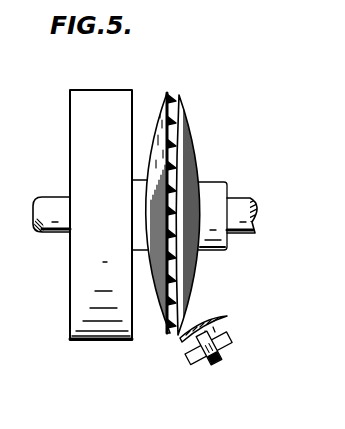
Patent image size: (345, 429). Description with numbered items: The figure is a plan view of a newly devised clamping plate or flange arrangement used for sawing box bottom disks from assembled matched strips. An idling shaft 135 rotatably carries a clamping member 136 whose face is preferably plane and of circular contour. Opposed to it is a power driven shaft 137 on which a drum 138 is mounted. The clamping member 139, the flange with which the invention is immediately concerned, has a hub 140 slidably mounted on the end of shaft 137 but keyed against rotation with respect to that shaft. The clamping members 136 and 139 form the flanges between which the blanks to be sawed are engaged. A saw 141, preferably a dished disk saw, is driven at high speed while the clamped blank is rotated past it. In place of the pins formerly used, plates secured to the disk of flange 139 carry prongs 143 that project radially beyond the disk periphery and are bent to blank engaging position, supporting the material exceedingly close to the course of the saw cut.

The shaft 135 is at (244, 206).
The clamping member 136 is at (191, 143).
The power driven shaft 137 is at (50, 197).
The drum 138 is at (102, 97).
The clamping member 139 is at (153, 140).
The hub 140 is at (147, 252).
The saw 141 is at (213, 316).
The prong 143 is at (172, 100).